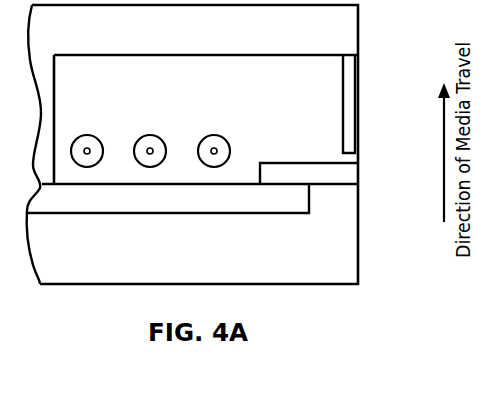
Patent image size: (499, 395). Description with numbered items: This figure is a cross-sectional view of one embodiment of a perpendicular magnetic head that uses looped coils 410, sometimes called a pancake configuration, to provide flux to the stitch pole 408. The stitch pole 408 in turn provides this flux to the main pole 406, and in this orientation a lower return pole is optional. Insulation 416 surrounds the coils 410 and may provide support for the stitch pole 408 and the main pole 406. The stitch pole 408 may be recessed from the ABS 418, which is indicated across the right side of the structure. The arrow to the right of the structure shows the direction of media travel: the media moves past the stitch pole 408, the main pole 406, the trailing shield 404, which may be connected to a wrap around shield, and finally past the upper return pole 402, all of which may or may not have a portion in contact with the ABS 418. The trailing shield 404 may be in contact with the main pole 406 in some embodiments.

The upper return pole 402 is at (272, 36).
The trailing shield 404 is at (358, 85).
The main pole 406 is at (358, 170).
The stitch pole 408 is at (222, 209).
The looped coils 410 is at (85, 135).
The insulation 416 is at (307, 124).
The ABS 418 is at (367, 20).